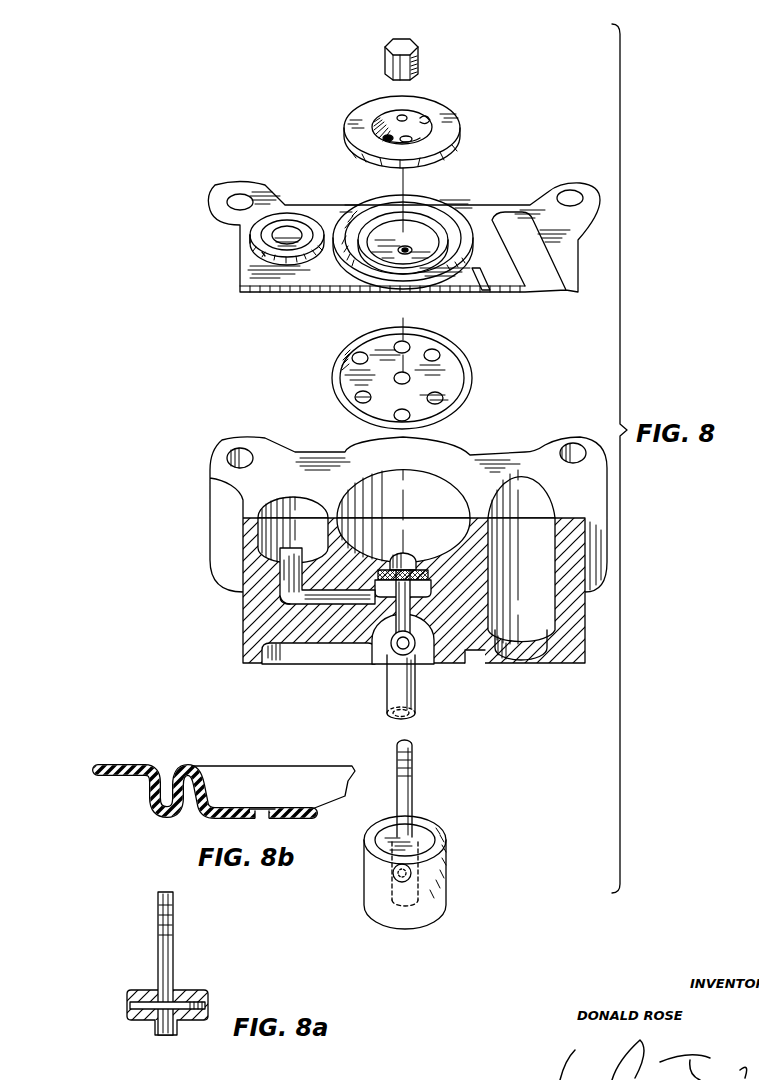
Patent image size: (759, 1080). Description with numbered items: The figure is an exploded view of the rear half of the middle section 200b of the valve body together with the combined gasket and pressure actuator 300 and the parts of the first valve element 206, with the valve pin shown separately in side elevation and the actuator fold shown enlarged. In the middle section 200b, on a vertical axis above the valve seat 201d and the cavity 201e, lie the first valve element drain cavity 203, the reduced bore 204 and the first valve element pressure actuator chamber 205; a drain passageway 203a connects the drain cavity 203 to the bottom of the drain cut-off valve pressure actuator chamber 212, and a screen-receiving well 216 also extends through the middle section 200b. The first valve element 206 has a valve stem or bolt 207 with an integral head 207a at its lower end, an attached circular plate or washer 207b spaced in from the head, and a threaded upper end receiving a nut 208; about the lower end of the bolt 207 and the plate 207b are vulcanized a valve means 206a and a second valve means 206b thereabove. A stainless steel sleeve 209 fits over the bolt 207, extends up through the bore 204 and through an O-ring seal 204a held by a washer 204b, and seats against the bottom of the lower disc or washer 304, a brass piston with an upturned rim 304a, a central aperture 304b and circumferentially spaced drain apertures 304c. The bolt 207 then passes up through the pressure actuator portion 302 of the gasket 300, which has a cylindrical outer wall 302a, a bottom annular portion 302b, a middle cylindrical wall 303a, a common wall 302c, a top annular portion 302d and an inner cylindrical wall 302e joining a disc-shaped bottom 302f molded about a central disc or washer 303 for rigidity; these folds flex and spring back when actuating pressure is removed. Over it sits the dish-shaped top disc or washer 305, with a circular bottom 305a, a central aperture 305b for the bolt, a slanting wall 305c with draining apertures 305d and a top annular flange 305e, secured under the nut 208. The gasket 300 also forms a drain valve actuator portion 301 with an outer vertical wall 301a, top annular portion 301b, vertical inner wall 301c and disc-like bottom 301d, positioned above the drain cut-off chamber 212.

In FIG. 8, the middle section 200b is at (222, 518).
In FIG. 8, the valve seat 201d is at (380, 650).
In FIG. 8, the cavity 201e is at (301, 648).
In FIG. 8, the first valve element drain cavity 203 is at (384, 600).
In FIG. 8, the drain passageway 203a is at (294, 608).
In FIG. 8, the reduced bore 204 is at (399, 554).
In FIG. 8, the O-ring seal 204a is at (430, 577).
In FIG. 8, the washer 204b is at (431, 601).
In FIG. 8, the first valve element pressure actuator chamber 205 is at (424, 471).
In FIG. 8, the first valve element 206 is at (413, 38).
In FIG. 8a, the valve means 206a is at (131, 1020).
In FIG. 8, the second valve means 206b is at (442, 846).
In FIG. 8a, the second valve means 206b is at (204, 994).
In FIG. 8, the valve stem or bolt 207 is at (413, 784).
In FIG. 8a, the valve stem or bolt 207 is at (174, 930).
In FIG. 8, the integral head 207a is at (404, 906).
In FIG. 8a, the integral head 207a is at (166, 1036).
In FIG. 8a, the circular plate or washer 207b is at (135, 1006).
In FIG. 8, the nut 208 is at (393, 62).
In FIG. 8, the sleeve 209 is at (416, 701).
In FIG. 8, the drain cut-off valve pressure actuator chamber 212 is at (282, 498).
In FIG. 8, the screen-receiving cavity or well 216 is at (523, 470).
In FIG. 8, the combined gasket and pressure actuator 300 is at (240, 275).
In FIG. 8, the drain valve actuator portion 301 is at (287, 232).
In FIG. 8, the outer vertical wall 301a is at (262, 252).
In FIG. 8, the top annular portion 301b is at (258, 238).
In FIG. 8, the vertical inner wall 301c is at (282, 224).
In FIG. 8, the disc-like bottom 301d is at (298, 236).
In FIG. 8, the pressure actuator portion 302 is at (425, 222).
In FIG. 8, the cylindrical vertical outer wall 302a is at (462, 219).
In FIG. 8b, the cylindrical vertical outer wall 302a is at (145, 786).
In FIG. 8, the bottom annular portion 302b is at (462, 252).
In FIG. 8b, the bottom annular portion 302b is at (162, 814).
In FIG. 8, the middle cylindrical wall 302c is at (366, 262).
In FIG. 8b, the middle cylindrical wall 302c is at (174, 782).
In FIG. 8, the top annular portion 302d is at (363, 250).
In FIG. 8b, the top annular portion 302d is at (185, 773).
In FIG. 8, the inner vertically extending cylindrical wall 302e is at (380, 214).
In FIG. 8b, the inner vertically extending cylindrical wall 302e is at (198, 790).
In FIG. 8, the bottom 302f is at (396, 198).
In FIG. 8, the central disc or washer 303 is at (390, 252).
In FIG. 8b, the central disc or washer 303 is at (274, 806).
In FIG. 8, the middle cylindrical wall 303a is at (405, 254).
In FIG. 8b, the middle cylindrical wall 303a is at (262, 819).
In FIG. 8, the lower disc or washer 304 is at (450, 380).
In FIG. 8, the upturned rim 304a is at (455, 345).
In FIG. 8, the central aperture 304b is at (403, 383).
In FIG. 8, the circumferentially spaced apertures 304c is at (358, 396).
In FIG. 8, the top disc or washer 305 is at (466, 117).
In FIG. 8, the circular bottom 305a is at (387, 135).
In FIG. 8, the central aperture 305b is at (406, 136).
In FIG. 8, the slanting vertical wall 305c is at (428, 118).
In FIG. 8, the draining apertures 305d is at (372, 121).
In FIG. 8, the top annular flange 305e is at (374, 132).